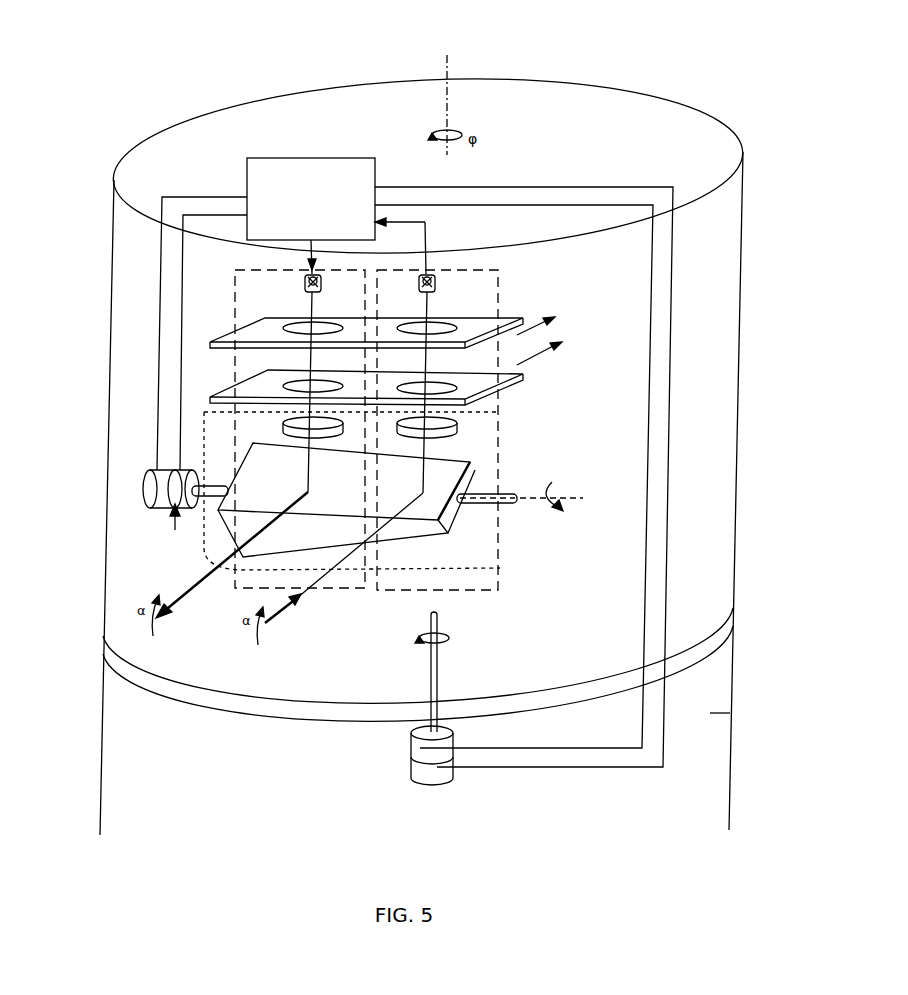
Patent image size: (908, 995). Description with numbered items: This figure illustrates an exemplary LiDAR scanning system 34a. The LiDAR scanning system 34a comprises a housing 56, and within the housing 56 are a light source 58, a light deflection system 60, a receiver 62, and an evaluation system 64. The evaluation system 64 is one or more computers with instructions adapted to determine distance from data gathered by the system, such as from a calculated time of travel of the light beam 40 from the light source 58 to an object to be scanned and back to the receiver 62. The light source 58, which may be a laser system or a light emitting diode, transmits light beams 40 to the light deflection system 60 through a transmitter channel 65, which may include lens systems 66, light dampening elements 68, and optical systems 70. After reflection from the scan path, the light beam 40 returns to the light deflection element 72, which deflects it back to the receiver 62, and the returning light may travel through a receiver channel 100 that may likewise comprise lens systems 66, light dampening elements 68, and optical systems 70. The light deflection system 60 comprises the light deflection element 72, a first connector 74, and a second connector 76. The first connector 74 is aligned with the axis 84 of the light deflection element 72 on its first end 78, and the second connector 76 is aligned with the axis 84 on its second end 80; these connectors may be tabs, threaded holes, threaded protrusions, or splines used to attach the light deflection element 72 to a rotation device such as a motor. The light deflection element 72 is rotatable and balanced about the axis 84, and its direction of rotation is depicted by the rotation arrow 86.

The LiDAR scanning system 34a is at (792, 94).
The housing 56 is at (697, 108).
The evaluation system 64 is at (350, 158).
The transmitter channel 65 is at (235, 274).
The light source 58 is at (304, 284).
The receiver 62 is at (438, 285).
The light beam 40 is at (310, 300).
The lens system 66 is at (338, 322).
The light dampening element 68 is at (338, 380).
The optical system 70 is at (282, 429).
The light deflection element 72 is at (308, 515).
The first connector 74 is at (210, 486).
The second connector 76 is at (473, 506).
The first end 78 is at (217, 543).
The second end 80 is at (468, 482).
The axis 84 is at (578, 500).
The rotation arrow 86 is at (560, 490).
The light deflection system 60 is at (202, 538).
The receiver channel 100 is at (407, 590).